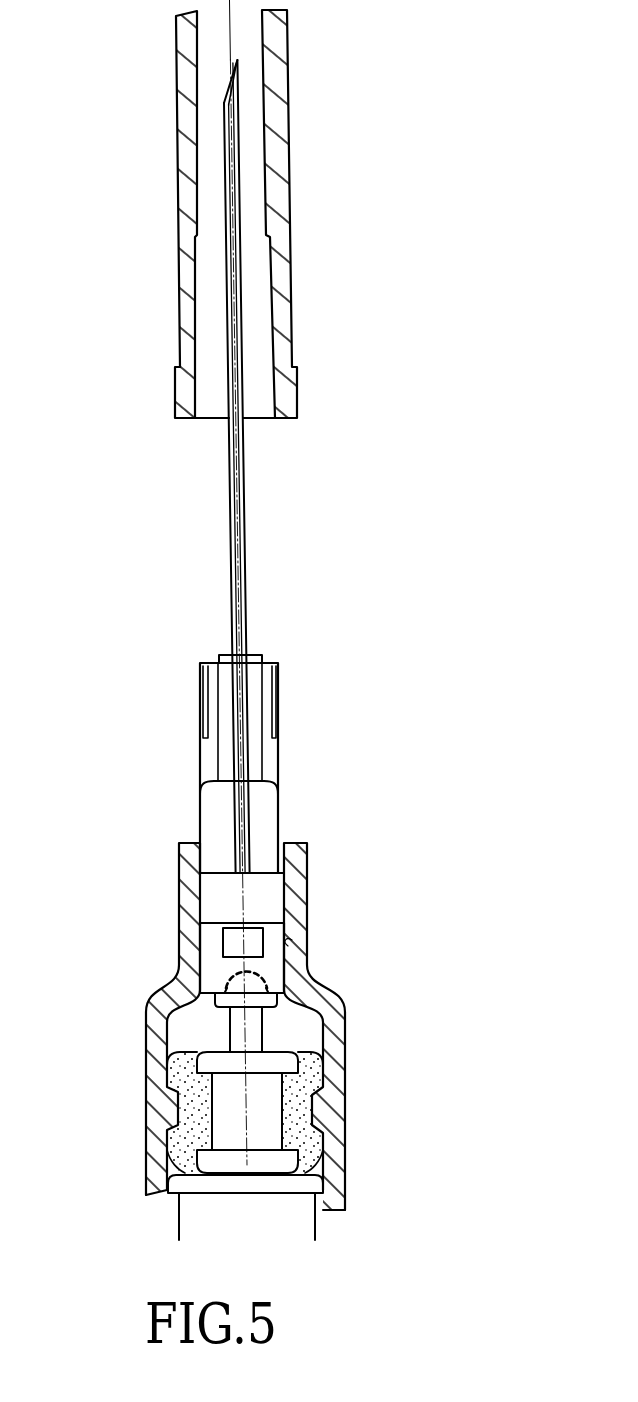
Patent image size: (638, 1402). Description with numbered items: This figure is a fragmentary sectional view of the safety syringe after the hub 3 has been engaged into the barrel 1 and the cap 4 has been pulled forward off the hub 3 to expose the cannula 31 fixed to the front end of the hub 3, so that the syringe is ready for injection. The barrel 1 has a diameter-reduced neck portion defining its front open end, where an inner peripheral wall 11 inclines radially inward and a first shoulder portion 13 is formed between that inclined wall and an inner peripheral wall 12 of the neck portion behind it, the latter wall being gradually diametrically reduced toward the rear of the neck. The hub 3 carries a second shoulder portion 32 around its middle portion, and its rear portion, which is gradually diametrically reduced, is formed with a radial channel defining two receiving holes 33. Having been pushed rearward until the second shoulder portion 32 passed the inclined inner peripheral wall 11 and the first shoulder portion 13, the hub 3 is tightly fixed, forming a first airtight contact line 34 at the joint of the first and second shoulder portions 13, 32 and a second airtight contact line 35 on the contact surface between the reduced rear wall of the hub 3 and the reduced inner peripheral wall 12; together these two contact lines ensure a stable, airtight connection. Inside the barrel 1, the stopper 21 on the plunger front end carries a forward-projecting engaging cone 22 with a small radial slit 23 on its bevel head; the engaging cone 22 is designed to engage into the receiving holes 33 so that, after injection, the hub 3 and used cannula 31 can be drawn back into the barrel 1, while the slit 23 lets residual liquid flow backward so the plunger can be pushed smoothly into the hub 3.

The barrel 1 is at (331, 1020).
The hub 3 is at (263, 809).
The cap 4 is at (283, 113).
The inner peripheral wall 11 is at (288, 845).
The inner peripheral wall 12 is at (292, 940).
The first shoulder portion 13 is at (330, 854).
The stopper 21 is at (300, 1118).
The engaging cone 22 is at (225, 1007).
The slit 23 is at (268, 983).
The cannula 31 is at (238, 343).
The second shoulder portion 32 is at (290, 871).
The receiving holes 33 is at (233, 940).
The first airtight contact line 34 is at (394, 879).
The second airtight contact line 35 is at (200, 923).